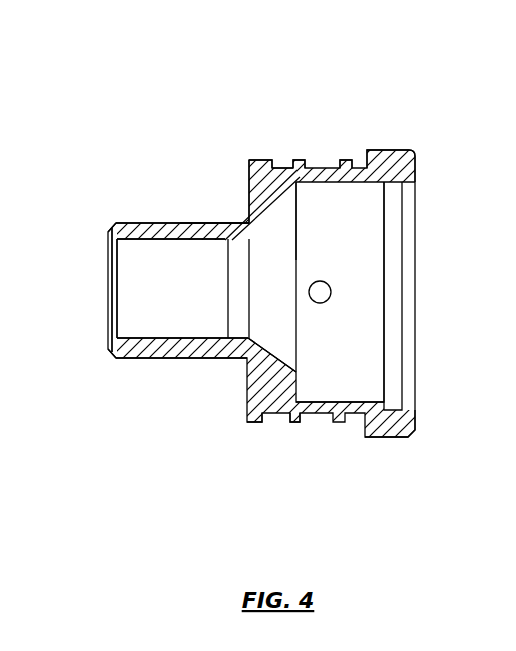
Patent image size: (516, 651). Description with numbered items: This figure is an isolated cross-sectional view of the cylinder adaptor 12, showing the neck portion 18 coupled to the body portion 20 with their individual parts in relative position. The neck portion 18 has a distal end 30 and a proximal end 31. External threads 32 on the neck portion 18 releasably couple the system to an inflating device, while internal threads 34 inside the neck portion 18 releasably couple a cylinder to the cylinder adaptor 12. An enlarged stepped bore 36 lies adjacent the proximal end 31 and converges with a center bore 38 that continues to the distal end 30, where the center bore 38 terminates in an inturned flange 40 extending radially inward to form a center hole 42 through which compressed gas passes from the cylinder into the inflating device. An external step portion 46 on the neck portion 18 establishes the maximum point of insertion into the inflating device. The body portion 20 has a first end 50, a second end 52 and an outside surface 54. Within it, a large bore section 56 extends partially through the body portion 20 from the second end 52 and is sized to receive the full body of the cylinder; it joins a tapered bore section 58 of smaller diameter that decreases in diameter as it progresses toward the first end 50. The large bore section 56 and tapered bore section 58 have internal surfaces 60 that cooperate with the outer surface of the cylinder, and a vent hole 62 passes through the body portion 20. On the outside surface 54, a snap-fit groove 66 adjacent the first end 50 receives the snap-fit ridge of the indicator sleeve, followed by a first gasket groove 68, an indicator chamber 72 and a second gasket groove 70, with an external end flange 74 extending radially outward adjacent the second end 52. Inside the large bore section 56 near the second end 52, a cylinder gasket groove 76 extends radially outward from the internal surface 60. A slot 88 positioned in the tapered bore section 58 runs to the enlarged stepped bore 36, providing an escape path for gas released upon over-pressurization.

The cylinder adaptor 12 is at (105, 110).
The neck portion 18 is at (129, 457).
The body portion 20 is at (340, 428).
The distal end 30 is at (106, 214).
The proximal end 31 is at (215, 209).
The external threads 32 is at (132, 228).
The internal threads 34 is at (122, 360).
The enlarged stepped bore 36 is at (238, 303).
The center bore 38 is at (182, 288).
The inturned flange 40 is at (106, 252).
The center hole 42 is at (112, 290).
The external step portion 46 is at (236, 215).
The first end 50 is at (248, 425).
The second end 52 is at (412, 434).
The outside surface 54 is at (292, 425).
The large bore section 56 is at (355, 292).
The tapered bore section 58 is at (262, 271).
The internal surfaces 60 is at (254, 339).
The vent hole 62 is at (331, 297).
The snap-fit groove 66 is at (264, 160).
The first gasket groove 68 is at (282, 167).
The second gasket groove 70 is at (354, 168).
The indicator chamber 72 is at (310, 167).
The external end flange 74 is at (401, 148).
The cylinder gasket groove 76 is at (392, 174).
The slot 88 is at (297, 228).